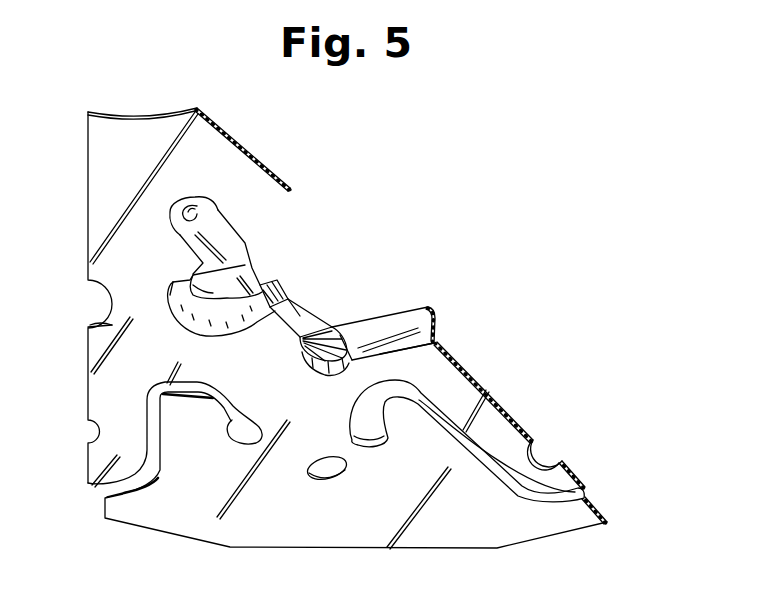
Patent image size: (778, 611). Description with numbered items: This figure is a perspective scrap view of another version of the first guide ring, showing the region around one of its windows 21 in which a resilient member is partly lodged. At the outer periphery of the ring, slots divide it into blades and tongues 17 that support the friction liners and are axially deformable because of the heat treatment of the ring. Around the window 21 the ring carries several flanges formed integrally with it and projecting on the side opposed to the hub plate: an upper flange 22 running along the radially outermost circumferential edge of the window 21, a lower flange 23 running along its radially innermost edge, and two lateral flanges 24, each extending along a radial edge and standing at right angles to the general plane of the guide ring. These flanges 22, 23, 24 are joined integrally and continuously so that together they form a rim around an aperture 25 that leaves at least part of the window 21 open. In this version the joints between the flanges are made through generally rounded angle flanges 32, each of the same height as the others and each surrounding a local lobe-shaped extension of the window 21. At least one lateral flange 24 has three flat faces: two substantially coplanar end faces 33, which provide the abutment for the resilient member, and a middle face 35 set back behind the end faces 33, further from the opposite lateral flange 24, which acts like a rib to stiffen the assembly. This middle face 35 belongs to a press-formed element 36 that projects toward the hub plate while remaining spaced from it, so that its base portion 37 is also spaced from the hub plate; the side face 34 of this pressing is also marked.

The tongue 17 is at (177, 513).
The window 21 is at (412, 350).
The upper flange 22 is at (417, 307).
The lower flange 23 is at (220, 209).
The lateral flange 24 is at (251, 267).
The aperture 25 is at (352, 325).
The angle flange 32 is at (180, 224).
The end face 33 is at (194, 264).
The side face 34 is at (290, 309).
The middle face 35 is at (275, 280).
The press-formed element 36 is at (182, 322).
The base portion 37 is at (173, 285).